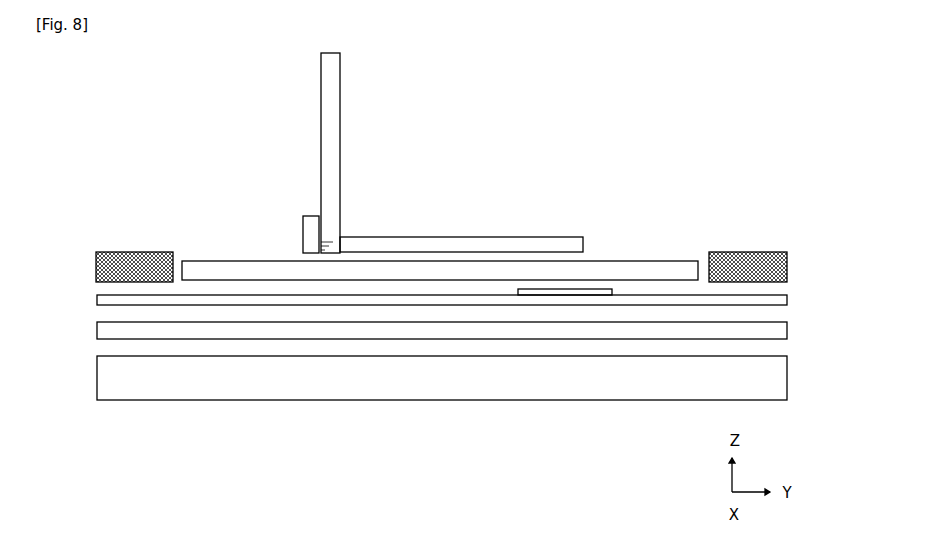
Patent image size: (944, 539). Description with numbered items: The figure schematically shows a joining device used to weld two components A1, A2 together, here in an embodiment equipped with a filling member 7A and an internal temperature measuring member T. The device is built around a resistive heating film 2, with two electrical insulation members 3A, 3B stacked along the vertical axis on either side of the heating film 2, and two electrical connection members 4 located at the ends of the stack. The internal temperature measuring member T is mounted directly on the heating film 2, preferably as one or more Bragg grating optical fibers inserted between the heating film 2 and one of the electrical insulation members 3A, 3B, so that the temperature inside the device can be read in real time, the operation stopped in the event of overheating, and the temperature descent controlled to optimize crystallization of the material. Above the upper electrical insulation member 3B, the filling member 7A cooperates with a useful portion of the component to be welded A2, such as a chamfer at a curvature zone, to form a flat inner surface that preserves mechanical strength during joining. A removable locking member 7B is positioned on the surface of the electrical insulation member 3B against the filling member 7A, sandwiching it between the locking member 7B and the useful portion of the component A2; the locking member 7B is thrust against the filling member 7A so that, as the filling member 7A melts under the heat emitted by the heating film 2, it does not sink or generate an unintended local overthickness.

The component to be welded A1 is at (156, 400).
The electrical insulation member 3A is at (787, 330).
The resistive heating film 2 is at (787, 300).
The internal temperature measuring member T is at (593, 289).
The electrical insulation member 3B is at (218, 260).
The electrical connection member 4 is at (96, 270).
The removable locking member 7B is at (302, 235).
The component to be welded A2 is at (340, 107).
The filling member 7A is at (323, 252).